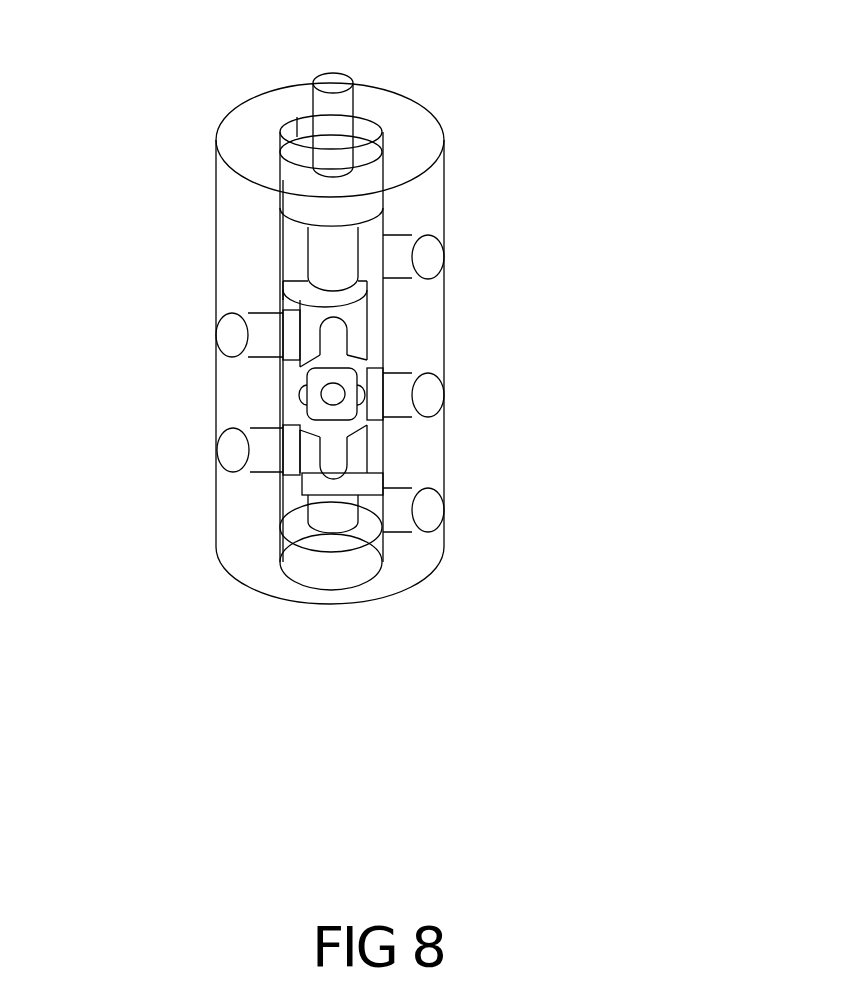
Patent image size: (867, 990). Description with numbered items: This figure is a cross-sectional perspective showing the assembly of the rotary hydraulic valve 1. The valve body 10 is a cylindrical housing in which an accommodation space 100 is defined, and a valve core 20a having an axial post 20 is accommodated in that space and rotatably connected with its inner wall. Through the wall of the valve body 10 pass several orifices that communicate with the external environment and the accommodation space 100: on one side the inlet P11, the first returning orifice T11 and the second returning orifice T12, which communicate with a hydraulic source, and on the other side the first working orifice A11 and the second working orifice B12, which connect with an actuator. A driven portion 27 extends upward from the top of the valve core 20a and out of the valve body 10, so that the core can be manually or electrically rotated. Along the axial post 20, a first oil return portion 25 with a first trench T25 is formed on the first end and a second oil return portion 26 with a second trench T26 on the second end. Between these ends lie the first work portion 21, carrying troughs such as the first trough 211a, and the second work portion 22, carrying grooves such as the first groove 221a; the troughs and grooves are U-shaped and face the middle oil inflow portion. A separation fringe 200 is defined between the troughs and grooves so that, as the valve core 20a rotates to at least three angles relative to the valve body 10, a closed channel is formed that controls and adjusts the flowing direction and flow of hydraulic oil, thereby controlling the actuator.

The rotary hydraulic valve 1 is at (207, 110).
The valve body 10 is at (440, 178).
The accommodation space 100 is at (427, 516).
The axial post 20 is at (331, 352).
The valve core 20a is at (300, 206).
The driven portion 27 is at (336, 118).
The first oil return portion 25 is at (360, 250).
The first trench T25 is at (333, 284).
The first work portion 21 is at (385, 352).
The separation fringe 200 is at (310, 445).
The second work portion 22 is at (380, 473).
The second oil return portion 26 is at (360, 502).
The second trench T26 is at (333, 527).
The first working orifice A11 is at (233, 327).
The first trough 211a is at (330, 333).
The second working orifice B12 is at (233, 453).
The first groove 221a is at (333, 452).
The first returning orifice T11 is at (430, 256).
The inlet P11 is at (430, 394).
The second returning orifice T12 is at (426, 513).